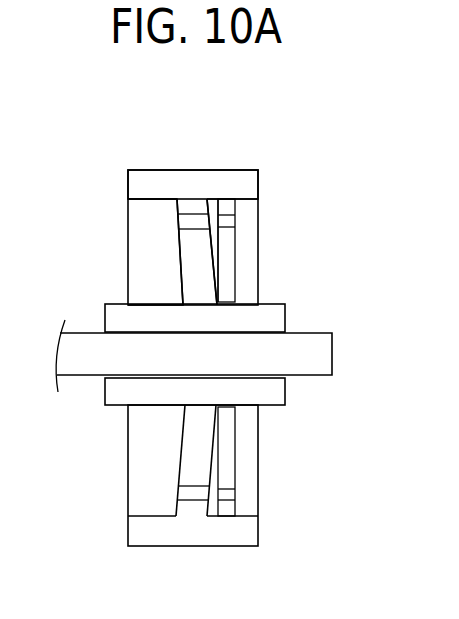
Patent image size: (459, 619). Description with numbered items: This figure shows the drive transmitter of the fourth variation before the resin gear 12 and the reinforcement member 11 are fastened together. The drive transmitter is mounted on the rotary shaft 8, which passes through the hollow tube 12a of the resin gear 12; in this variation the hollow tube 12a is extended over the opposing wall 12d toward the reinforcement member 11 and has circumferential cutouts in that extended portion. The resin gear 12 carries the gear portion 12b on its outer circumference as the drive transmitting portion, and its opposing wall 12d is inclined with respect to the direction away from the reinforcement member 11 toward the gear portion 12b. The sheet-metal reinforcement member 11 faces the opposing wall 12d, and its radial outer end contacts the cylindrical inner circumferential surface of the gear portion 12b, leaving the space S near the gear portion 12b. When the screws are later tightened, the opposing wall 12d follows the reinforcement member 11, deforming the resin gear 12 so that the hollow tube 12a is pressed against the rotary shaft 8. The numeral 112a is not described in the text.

The rotary shaft 8 is at (325, 333).
The reinforcement member 11 is at (237, 270).
The resin gear 12 is at (173, 475).
The hollow tube 12a is at (262, 407).
The gear portion 12b is at (200, 168).
The opposing wall 12d is at (178, 262).
The flange portion 112a is at (138, 331).
The space S is at (215, 209).